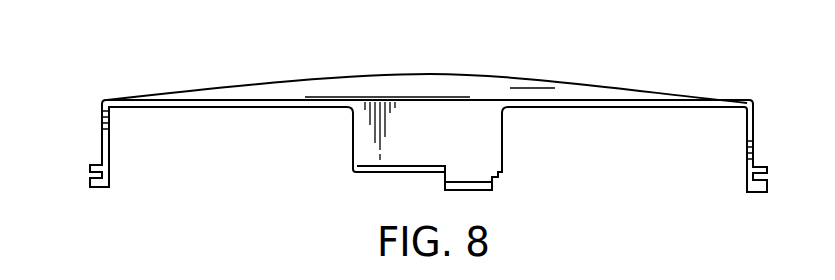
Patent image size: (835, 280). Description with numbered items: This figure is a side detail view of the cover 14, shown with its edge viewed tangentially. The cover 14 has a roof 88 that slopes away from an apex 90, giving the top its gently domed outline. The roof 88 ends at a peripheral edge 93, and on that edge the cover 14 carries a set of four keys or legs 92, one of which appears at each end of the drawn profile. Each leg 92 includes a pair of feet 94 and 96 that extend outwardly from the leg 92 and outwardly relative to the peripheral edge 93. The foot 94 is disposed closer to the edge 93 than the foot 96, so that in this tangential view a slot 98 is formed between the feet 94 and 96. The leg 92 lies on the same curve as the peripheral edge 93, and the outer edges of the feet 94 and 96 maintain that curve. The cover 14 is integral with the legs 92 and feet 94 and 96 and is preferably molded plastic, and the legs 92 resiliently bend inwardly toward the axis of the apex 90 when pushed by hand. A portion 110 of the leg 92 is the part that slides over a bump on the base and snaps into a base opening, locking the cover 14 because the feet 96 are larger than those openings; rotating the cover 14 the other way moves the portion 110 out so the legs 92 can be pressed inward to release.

The cover 14 is at (600, 90).
The roof 88 is at (252, 84).
The apex 90 is at (428, 74).
The leg 92 is at (428, 142).
The peripheral edge 93 is at (182, 110).
The foot 94 is at (370, 167).
The foot 96 is at (476, 176).
The slot 98 is at (768, 180).
The portion of leg 110 is at (460, 167).